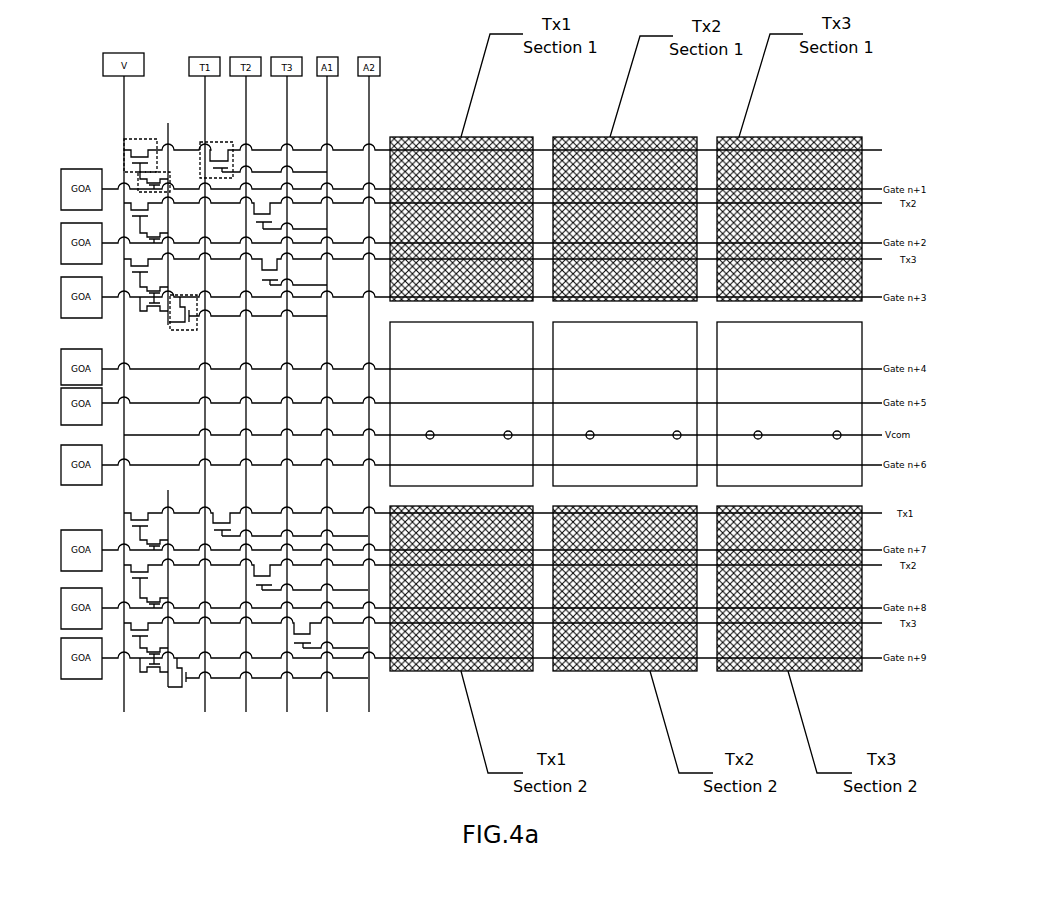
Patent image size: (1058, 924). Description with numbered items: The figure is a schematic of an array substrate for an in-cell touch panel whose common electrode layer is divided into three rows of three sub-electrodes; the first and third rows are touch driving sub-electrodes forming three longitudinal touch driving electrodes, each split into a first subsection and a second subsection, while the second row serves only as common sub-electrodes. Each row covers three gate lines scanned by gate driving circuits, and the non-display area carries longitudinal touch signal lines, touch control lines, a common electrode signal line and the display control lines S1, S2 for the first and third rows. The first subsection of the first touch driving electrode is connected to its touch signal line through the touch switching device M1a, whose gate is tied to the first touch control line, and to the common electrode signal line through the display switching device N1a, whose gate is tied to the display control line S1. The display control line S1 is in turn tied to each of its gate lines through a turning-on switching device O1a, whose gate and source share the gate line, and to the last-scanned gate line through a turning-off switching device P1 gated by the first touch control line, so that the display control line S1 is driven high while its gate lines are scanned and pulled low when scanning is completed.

The display switching device N1a is at (140, 140).
The turning-on switching device O1a is at (169, 173).
The touch switching device M1a is at (222, 140).
The turning-off switching device P1 is at (187, 333).
The display control line S1 is at (168, 217).
The display control line S2 is at (174, 586).